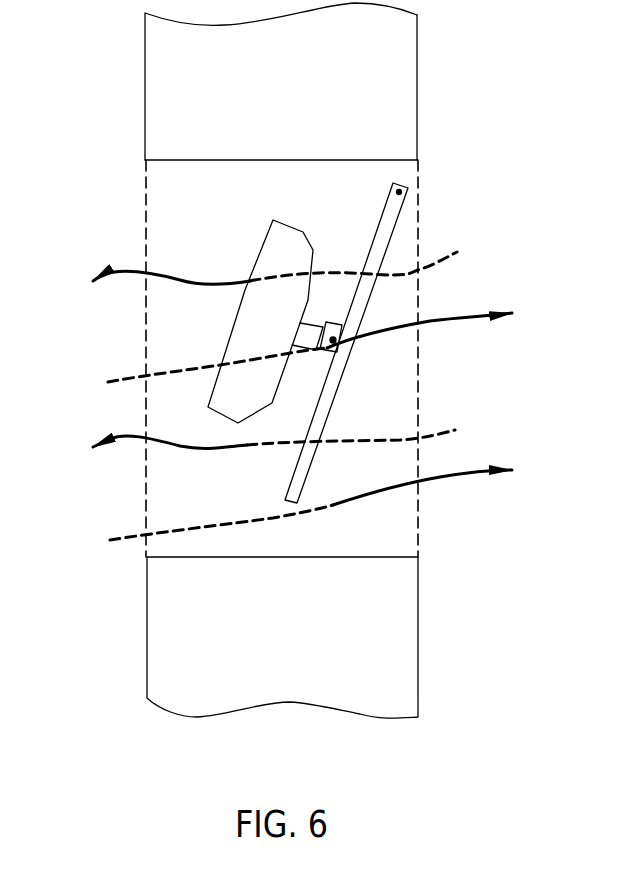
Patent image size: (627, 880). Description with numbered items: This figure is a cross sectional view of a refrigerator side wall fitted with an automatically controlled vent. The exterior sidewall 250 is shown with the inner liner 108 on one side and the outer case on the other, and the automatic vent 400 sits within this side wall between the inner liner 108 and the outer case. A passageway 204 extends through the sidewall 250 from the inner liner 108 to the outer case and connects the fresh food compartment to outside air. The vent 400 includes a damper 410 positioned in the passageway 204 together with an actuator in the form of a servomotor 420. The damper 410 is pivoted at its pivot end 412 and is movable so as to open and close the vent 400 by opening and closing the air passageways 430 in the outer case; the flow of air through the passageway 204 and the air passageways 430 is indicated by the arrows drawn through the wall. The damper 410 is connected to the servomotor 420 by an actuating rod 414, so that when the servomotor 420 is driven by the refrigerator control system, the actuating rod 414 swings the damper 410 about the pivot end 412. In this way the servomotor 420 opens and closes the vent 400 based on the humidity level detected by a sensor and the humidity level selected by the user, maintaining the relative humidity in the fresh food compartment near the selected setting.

The inner liner 108 is at (145, 66).
The exterior sidewall 250 is at (418, 69).
The passageway 204 is at (175, 488).
The automatic vent 400 is at (509, 256).
The damper 410 is at (310, 467).
The pivot end 412 is at (405, 190).
The actuating rod 414 is at (319, 323).
The servomotor 420 is at (273, 220).
The air passageways 430 is at (419, 378).